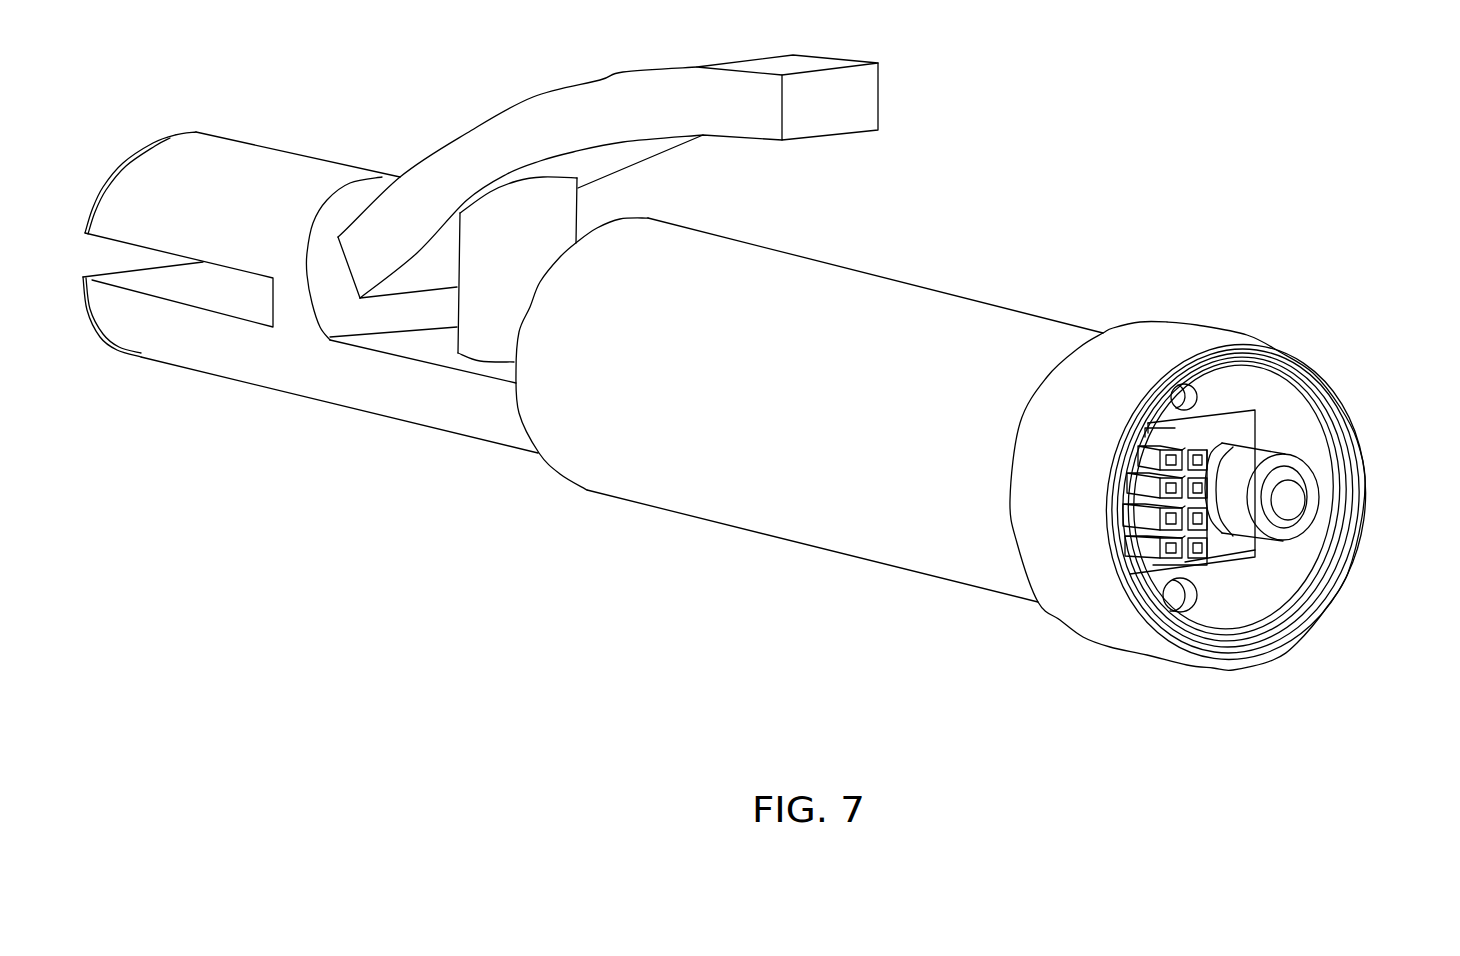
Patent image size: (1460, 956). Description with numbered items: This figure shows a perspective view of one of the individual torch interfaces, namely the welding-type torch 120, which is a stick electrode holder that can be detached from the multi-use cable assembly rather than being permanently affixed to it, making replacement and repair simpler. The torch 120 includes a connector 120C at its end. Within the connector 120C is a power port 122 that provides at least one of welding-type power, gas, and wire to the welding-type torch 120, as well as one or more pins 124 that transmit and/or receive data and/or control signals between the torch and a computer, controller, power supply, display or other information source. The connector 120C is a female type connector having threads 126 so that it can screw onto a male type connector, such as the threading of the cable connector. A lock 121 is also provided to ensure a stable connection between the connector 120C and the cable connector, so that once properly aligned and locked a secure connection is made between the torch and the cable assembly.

The stick electrode holder 120 is at (510, 110).
The connector 120C is at (1369, 415).
The lock 121 is at (1218, 333).
The power port 122 is at (1312, 489).
The pins 124 is at (1147, 523).
The threads 126 is at (1217, 627).